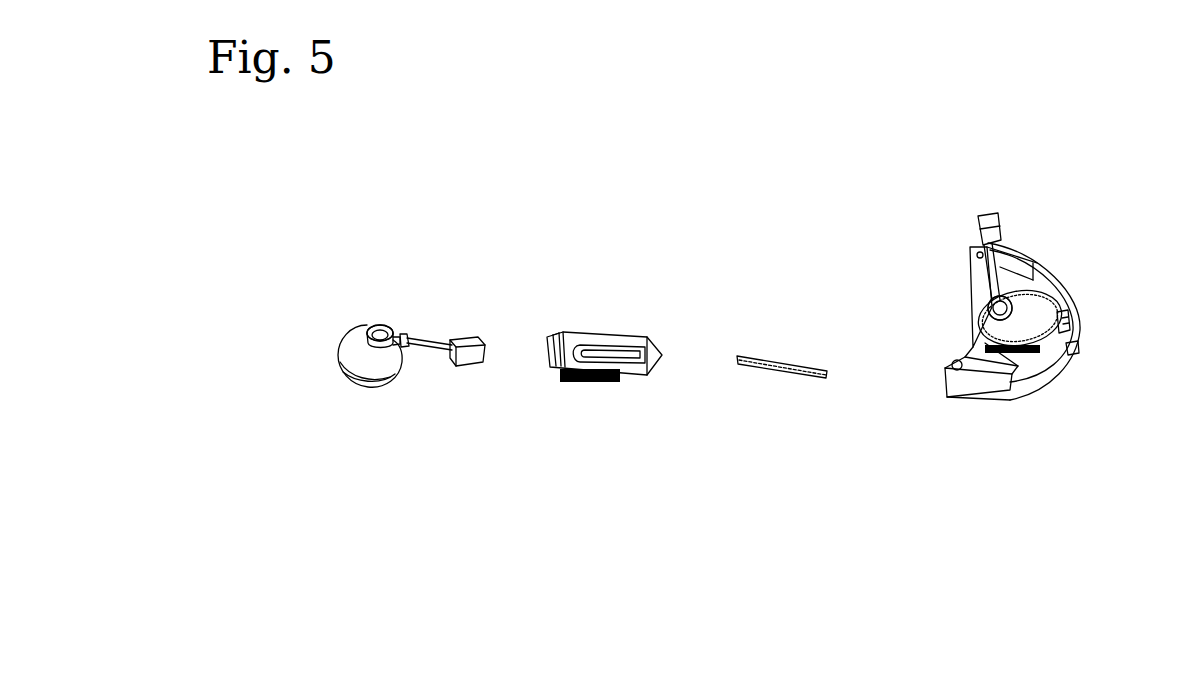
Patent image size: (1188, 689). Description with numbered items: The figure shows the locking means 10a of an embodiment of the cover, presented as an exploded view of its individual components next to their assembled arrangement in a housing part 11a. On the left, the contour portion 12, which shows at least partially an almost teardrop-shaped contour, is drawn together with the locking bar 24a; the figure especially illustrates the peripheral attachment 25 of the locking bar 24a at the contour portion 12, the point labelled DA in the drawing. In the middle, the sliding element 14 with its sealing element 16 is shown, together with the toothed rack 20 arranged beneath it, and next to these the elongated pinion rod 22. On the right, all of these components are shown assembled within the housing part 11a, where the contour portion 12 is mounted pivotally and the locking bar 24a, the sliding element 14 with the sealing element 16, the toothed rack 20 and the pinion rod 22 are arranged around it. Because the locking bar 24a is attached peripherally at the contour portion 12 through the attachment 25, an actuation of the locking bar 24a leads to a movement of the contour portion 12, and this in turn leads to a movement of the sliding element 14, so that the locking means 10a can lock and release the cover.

The locking means 10a is at (889, 558).
The housing part 11a is at (995, 380).
The contour portion 12 is at (365, 368).
The sliding element 14 is at (595, 345).
The sealing element 16 is at (562, 337).
The toothed rack 20 is at (608, 368).
The pinion rod 22 is at (755, 358).
The locking bar 24a is at (468, 352).
The peripheral attachment 25 is at (377, 333).
The drive axis DA is at (340, 280).